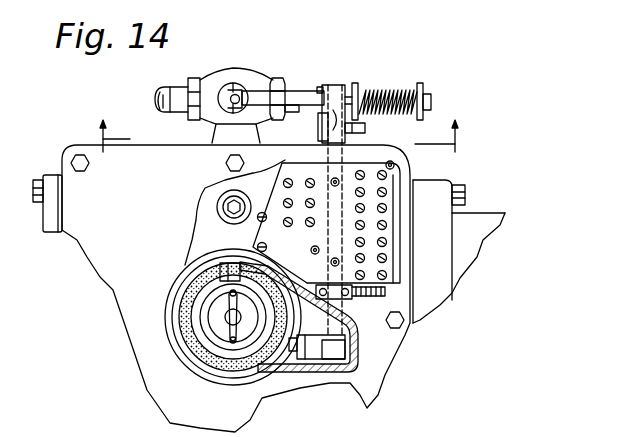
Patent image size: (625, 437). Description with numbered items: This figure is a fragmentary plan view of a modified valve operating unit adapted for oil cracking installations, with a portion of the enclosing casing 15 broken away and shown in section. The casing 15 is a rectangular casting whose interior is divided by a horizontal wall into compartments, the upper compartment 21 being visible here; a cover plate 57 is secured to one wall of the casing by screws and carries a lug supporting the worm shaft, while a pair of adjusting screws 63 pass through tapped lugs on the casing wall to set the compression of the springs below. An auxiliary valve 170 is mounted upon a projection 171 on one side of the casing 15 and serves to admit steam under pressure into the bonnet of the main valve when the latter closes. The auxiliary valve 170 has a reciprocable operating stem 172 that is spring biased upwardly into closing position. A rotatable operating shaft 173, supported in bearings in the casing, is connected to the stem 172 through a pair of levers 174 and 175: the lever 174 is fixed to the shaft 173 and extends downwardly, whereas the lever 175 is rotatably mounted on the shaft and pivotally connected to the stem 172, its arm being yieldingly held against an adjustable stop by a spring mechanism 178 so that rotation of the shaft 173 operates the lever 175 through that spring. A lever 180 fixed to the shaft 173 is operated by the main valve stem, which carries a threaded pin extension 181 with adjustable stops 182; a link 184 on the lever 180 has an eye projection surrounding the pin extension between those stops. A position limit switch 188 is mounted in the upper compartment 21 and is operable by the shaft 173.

The enclosing casing 15 is at (145, 146).
The upper compartment 21 is at (200, 213).
The cover plate 57 is at (48, 175).
The adjusting screws 63 is at (218, 204).
The auxiliary valve 170 is at (214, 74).
The projection 171 is at (230, 106).
The operating stem 172 is at (238, 92).
The operating shaft 173 is at (342, 85).
The lever 174 is at (318, 124).
The lever 175 is at (266, 92).
The spring mechanism 178 is at (386, 86).
The lever 180 is at (313, 348).
The threaded pin extension 181 is at (228, 328).
The adjustable stop 182 is at (224, 312).
The link 184 is at (226, 264).
The position limit switch 188 is at (326, 210).